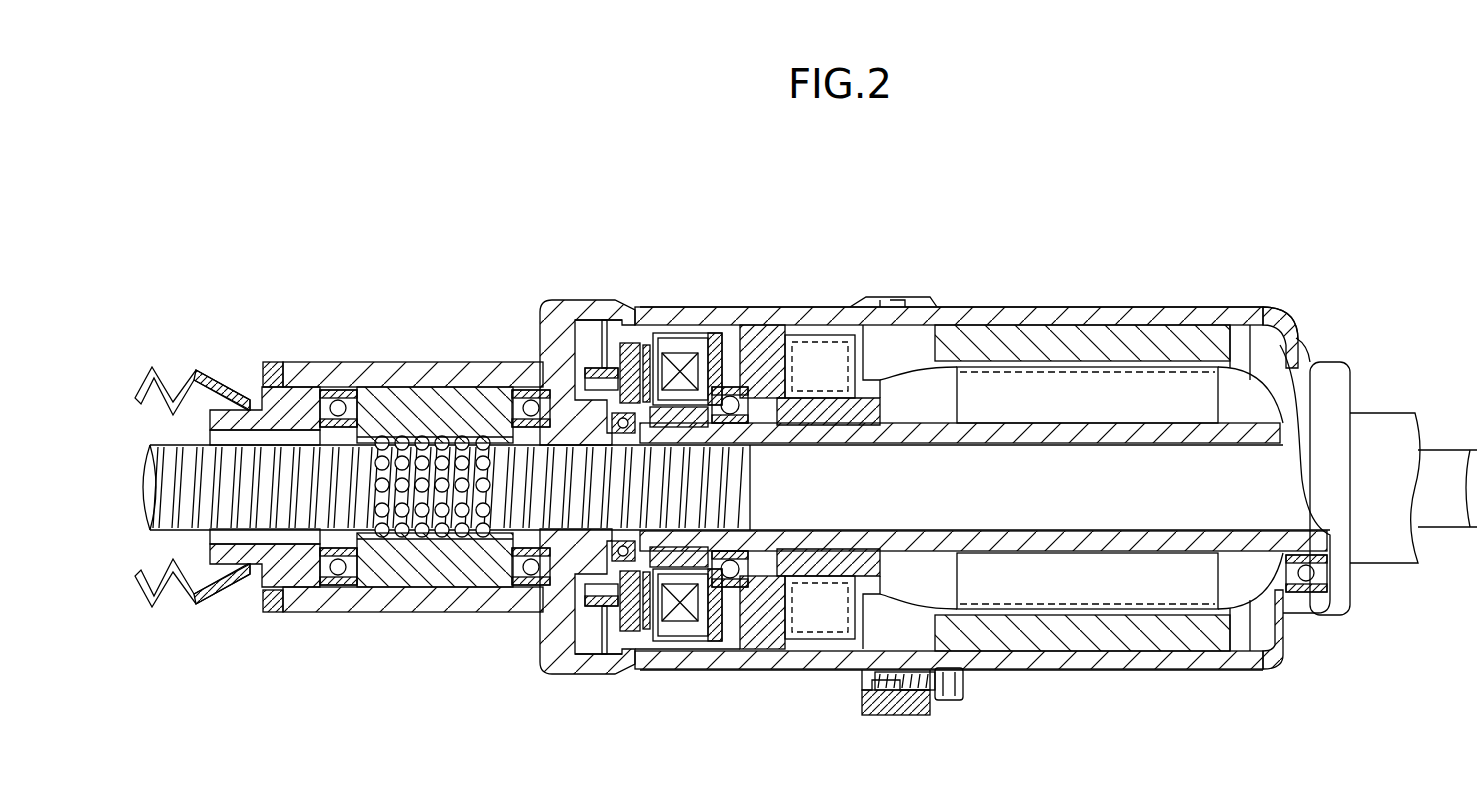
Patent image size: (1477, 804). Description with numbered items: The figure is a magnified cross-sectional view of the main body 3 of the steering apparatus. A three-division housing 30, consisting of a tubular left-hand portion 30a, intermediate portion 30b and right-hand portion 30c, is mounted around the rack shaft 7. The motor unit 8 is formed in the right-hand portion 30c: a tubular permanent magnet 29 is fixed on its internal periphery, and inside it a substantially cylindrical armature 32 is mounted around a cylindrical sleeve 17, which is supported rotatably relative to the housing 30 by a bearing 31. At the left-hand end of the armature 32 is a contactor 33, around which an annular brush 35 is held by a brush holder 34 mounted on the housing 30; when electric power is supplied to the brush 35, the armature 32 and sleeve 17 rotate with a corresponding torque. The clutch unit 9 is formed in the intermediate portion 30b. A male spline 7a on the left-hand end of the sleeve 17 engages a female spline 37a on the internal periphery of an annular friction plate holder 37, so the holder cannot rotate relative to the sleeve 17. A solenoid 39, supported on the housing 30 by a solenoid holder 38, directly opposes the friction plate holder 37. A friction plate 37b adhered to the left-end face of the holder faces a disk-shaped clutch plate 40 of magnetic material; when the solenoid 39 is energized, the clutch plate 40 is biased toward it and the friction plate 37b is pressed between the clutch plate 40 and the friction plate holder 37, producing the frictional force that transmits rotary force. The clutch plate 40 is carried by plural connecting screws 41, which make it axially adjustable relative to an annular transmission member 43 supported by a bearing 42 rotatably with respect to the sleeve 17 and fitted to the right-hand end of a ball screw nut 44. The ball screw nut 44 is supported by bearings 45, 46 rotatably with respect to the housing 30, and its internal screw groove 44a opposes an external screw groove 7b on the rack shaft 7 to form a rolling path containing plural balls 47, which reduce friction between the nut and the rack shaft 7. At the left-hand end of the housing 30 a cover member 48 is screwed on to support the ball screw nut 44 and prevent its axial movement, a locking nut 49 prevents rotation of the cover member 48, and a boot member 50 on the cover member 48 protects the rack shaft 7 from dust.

The main body 3 is at (1005, 215).
The rack shaft 7 is at (1160, 520).
The male spline 7a is at (710, 400).
The external screw groove 7b is at (560, 453).
The motor unit 8 is at (660, 685).
The clutch unit 9 is at (607, 290).
The cylindrical sleeve 17 is at (1020, 435).
The tubular permanent magnet 29 is at (1100, 335).
The housing 30 is at (1040, 298).
The left-hand portion 30a is at (465, 375).
The intermediate portion 30b is at (752, 320).
The right-hand portion 30c is at (1170, 320).
The bearing 31 is at (735, 600).
The armature 32 is at (1130, 600).
The contactor 33 is at (870, 390).
The brush holder 34 is at (770, 632).
The annular brush 35 is at (830, 632).
The friction plate holder 37 is at (680, 400).
The female spline 37a is at (640, 620).
The friction plate 37b is at (652, 355).
The solenoid holder 38 is at (705, 630).
The solenoid 39 is at (680, 622).
The clutch plate 40 is at (615, 350).
The connecting screws 41 is at (598, 385).
The bearing 42 is at (600, 650).
The annular transmission member 43 is at (570, 375).
The ball screw nut 44 is at (420, 590).
The internal screw groove 44a is at (370, 450).
The bearing 45 is at (330, 590).
The bearing 46 is at (520, 590).
The balls 47 is at (440, 440).
The cover member 48 is at (262, 400).
The locking nut 49 is at (272, 368).
The boot member 50 is at (195, 595).